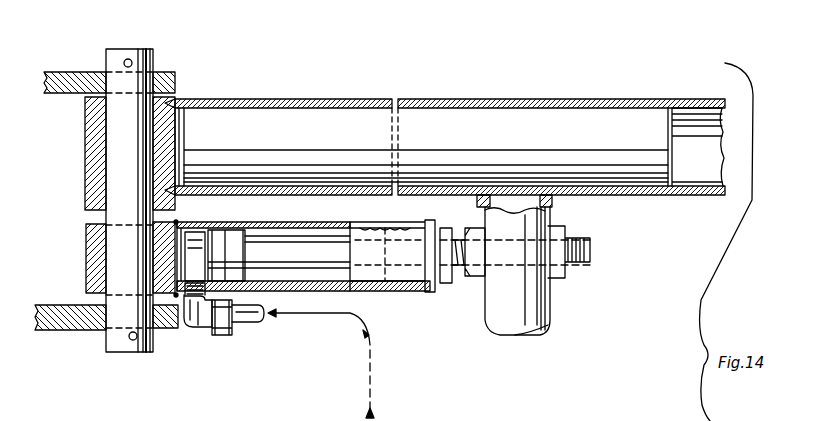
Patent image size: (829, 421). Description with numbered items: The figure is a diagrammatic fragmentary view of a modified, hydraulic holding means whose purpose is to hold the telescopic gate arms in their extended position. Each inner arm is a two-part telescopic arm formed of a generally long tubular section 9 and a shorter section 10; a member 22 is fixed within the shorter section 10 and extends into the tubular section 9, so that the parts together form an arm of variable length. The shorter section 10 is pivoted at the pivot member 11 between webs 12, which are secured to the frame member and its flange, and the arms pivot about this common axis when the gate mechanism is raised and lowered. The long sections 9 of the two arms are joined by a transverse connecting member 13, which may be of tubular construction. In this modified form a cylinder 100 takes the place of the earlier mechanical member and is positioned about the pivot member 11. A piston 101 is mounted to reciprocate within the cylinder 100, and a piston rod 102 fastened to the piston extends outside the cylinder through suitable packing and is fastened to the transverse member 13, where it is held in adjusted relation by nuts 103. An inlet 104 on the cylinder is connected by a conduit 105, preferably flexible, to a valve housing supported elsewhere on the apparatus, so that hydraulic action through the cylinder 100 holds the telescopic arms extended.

The long section of inner arm 9 is at (690, 99).
The shorter section of inner arm 10 is at (445, 131).
The pivot member 11 is at (140, 50).
The webs 12 is at (176, 72).
The connecting member 13 is at (552, 305).
The member 22 is at (353, 120).
The cylinder 100 is at (410, 260).
The piston 101 is at (235, 235).
The piston rod 102 is at (316, 255).
The nuts 103 is at (478, 276).
The inlet 104 is at (204, 326).
The conduit 105 is at (250, 326).